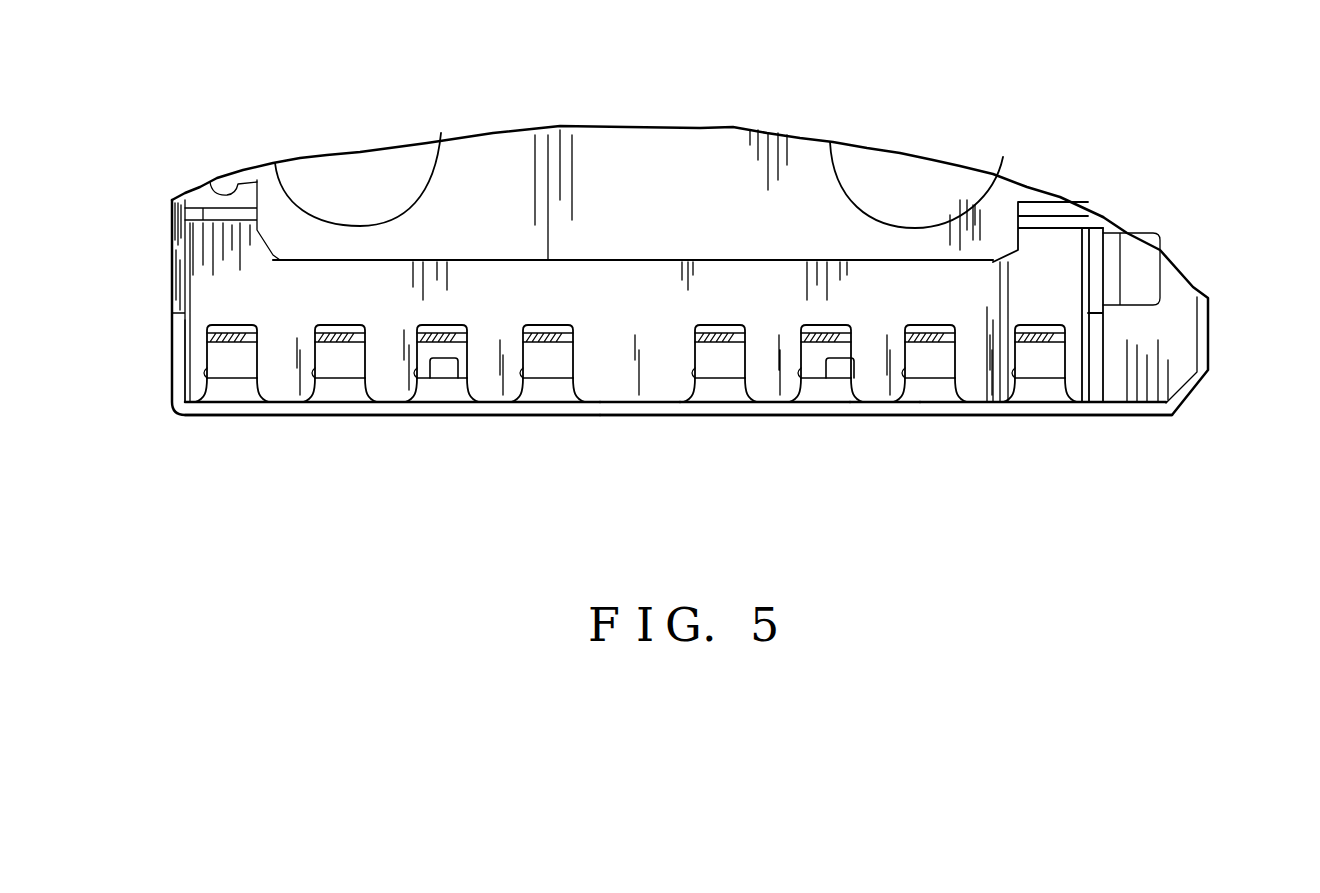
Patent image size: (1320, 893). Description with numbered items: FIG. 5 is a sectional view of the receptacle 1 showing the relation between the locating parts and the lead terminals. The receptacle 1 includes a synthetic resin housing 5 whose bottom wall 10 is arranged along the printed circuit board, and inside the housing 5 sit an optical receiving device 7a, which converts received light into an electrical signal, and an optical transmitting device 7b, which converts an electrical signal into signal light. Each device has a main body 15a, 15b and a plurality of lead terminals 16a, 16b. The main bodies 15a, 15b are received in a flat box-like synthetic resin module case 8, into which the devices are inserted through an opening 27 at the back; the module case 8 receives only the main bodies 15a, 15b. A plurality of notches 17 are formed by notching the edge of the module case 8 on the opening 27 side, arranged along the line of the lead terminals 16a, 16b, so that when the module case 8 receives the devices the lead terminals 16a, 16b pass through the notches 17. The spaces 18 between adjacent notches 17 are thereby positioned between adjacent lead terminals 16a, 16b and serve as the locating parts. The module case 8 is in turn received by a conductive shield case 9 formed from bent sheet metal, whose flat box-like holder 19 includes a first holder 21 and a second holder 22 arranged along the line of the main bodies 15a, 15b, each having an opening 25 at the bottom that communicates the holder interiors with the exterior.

The receptacle 1 is at (738, 113).
The housing 5 is at (590, 126).
The optical receiving device 7a is at (390, 402).
The optical transmitting device 7b is at (932, 402).
The module case 8 is at (602, 410).
The shield case 9 is at (770, 416).
The bottom wall 10 is at (698, 150).
The main body 15a is at (350, 350).
The main body 15b is at (727, 360).
The lead terminals 16a is at (224, 365).
The lead terminals 16b is at (705, 370).
The notches 17 is at (317, 385).
The spaces 18 is at (292, 355).
The holder 19 is at (638, 403).
The first holder 21 is at (337, 337).
The second holder 22 is at (882, 403).
The opening 25 is at (190, 377).
The opening 27 is at (365, 385).